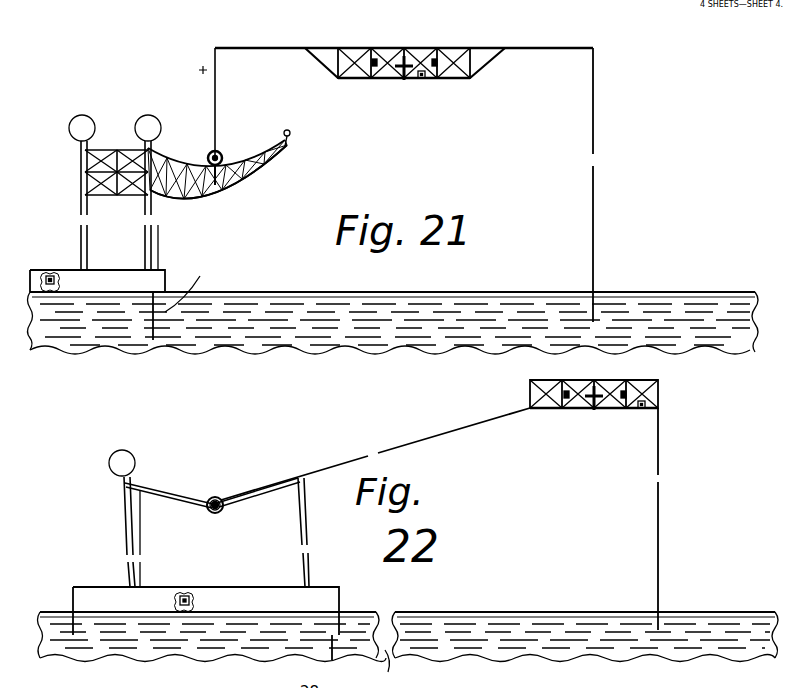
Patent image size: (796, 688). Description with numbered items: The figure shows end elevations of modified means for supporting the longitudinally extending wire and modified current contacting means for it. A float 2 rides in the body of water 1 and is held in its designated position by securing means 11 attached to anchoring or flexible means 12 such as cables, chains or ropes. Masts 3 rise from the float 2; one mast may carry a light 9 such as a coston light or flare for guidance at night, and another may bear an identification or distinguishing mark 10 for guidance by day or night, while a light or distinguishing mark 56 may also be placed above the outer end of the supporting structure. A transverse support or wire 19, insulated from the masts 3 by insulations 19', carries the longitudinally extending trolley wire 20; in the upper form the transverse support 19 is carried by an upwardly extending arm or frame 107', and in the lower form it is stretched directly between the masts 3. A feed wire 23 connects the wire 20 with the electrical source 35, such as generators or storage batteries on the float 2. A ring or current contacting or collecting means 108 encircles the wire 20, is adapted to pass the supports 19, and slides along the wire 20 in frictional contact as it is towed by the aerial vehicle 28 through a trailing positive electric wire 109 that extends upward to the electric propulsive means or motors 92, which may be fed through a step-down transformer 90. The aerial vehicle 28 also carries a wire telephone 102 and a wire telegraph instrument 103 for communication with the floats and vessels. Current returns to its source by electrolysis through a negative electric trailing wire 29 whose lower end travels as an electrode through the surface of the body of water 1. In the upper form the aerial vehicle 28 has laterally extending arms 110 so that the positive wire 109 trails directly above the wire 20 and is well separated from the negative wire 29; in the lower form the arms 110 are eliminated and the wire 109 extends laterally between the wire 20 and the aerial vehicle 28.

In FIG. 21, the body of water 1 is at (300, 294).
In FIG. 22, the body of water 1 is at (488, 612).
In FIG. 21, the float 2 is at (97, 281).
In FIG. 22, the float 2 is at (206, 611).
In FIG. 21, the mast 3 is at (145, 243).
In FIG. 22, the mast 3 is at (124, 540).
In FIG. 21, the light 9 is at (80, 128).
In FIG. 21, the identification or distinguishing mark 10 is at (148, 128).
In FIG. 21, the securing means 11 is at (194, 285).
In FIG. 22, the securing means 11 is at (560, 677).
In FIG. 21, the anchoring or flexible means 12 is at (153, 340).
In FIG. 22, the anchoring or flexible means 12 is at (80, 637).
In FIG. 21, the transverse support or wire 19 is at (216, 145).
In FIG. 22, the transverse support or wire 19 is at (169, 481).
In FIG. 21, the insulation 19' is at (217, 154).
In FIG. 22, the insulation 19' is at (258, 503).
In FIG. 21, the longitudinally extending wire 20 is at (210, 178).
In FIG. 22, the longitudinally extending wire 20 is at (216, 496).
In FIG. 21, the feed wire 23 is at (158, 248).
In FIG. 22, the feed wire 23 is at (141, 540).
In FIG. 21, the aerial vehicle 28 is at (450, 80).
In FIG. 22, the aerial vehicle 28 is at (612, 410).
In FIG. 21, the negative electric trailing wire 29 is at (590, 262).
In FIG. 22, the negative electric trailing wire 29 is at (656, 525).
In FIG. 21, the electrical source 35 is at (48, 274).
In FIG. 22, the electrical source 35 is at (176, 601).
In FIG. 21, the light, identification or distinguishing mark 56 is at (290, 133).
In FIG. 21, the transformer 90 is at (421, 80).
In FIG. 22, the transformer 90 is at (641, 410).
In FIG. 21, the electric propulsive means or motor 92 is at (402, 80).
In FIG. 22, the electric propulsive means or motor 92 is at (592, 410).
In FIG. 21, the wire telephone 102 is at (378, 57).
In FIG. 22, the wire telephone 102 is at (572, 389).
In FIG. 21, the wire telegraph instrument 103 is at (435, 57).
In FIG. 22, the wire telegraph instrument 103 is at (623, 390).
In FIG. 21, the upwardly extending arm or frame 107' is at (218, 178).
In FIG. 21, the current contacting or collecting means 108 is at (210, 152).
In FIG. 22, the current contacting or collecting means 108 is at (218, 514).
In FIG. 21, the trailing positive electric wire 109 is at (216, 92).
In FIG. 22, the trailing positive electric wire 109 is at (331, 462).
In FIG. 21, the laterally extending arm 110 is at (256, 46).